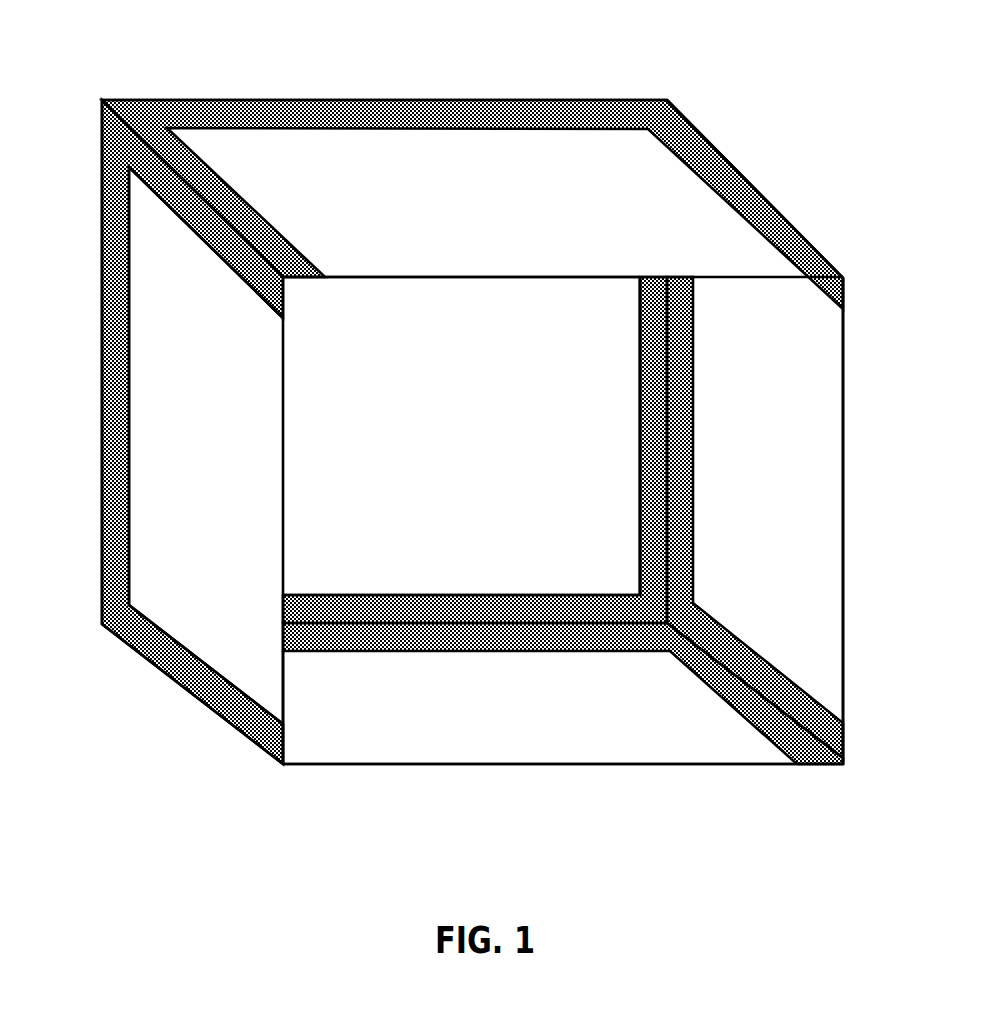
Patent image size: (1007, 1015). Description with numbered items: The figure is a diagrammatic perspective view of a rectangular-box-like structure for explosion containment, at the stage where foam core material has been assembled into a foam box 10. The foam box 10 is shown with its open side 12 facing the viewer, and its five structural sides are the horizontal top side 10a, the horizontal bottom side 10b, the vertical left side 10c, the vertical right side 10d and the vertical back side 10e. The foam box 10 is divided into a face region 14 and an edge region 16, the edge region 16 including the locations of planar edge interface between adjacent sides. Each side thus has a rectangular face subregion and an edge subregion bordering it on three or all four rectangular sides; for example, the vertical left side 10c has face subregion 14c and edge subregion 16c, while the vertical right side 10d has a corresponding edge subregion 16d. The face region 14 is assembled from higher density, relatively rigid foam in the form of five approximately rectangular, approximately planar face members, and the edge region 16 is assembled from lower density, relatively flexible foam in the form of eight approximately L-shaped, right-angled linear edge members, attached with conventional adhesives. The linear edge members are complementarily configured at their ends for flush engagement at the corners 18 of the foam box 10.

The foam box 10 is at (712, 123).
The horizontal top side 10a is at (415, 195).
The horizontal bottom side 10b is at (607, 713).
The vertical left side 10c is at (205, 515).
The vertical right side 10d is at (757, 438).
The vertical back side 10e is at (600, 402).
The open side 12 is at (415, 693).
The face region 14 is at (322, 557).
The face subregion 14c is at (182, 355).
The edge region 16 is at (410, 612).
The edge subregion 16c is at (120, 178).
The edge subregion 16d is at (678, 542).
The corners 18 is at (668, 97).